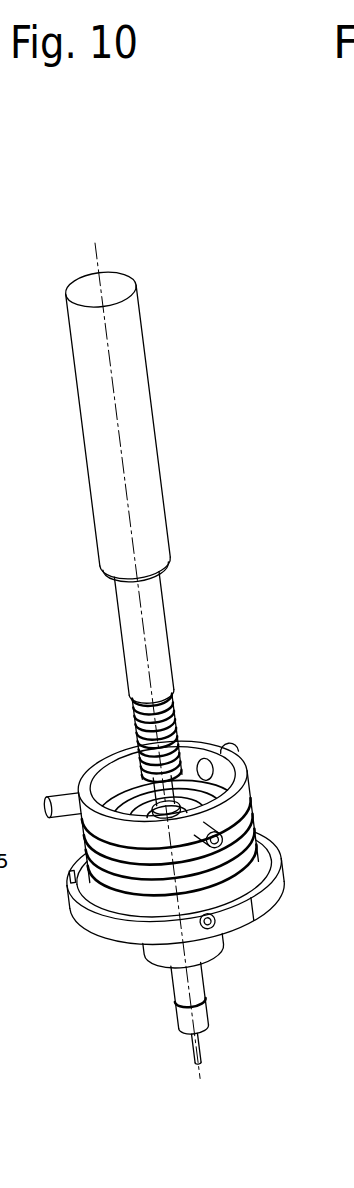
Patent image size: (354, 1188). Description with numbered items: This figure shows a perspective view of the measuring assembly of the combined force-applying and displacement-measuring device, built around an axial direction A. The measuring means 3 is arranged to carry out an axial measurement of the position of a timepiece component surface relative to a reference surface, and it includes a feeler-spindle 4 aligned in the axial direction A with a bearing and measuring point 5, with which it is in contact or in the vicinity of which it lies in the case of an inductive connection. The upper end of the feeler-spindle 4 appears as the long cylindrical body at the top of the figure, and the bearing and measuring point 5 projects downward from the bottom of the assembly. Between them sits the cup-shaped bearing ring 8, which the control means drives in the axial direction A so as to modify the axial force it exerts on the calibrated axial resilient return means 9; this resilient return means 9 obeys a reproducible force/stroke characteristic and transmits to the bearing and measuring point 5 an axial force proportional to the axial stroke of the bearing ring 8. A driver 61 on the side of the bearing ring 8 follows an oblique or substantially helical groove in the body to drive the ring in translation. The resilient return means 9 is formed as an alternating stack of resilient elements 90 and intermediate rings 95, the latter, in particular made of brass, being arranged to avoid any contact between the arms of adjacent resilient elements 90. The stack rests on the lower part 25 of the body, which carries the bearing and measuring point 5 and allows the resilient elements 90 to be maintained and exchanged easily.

The axial direction A is at (104, 252).
The measuring means 3 is at (167, 339).
The feeler-spindle 4 is at (125, 385).
The bearing and measuring point 5 is at (202, 1007).
The bearing ring 8 is at (243, 798).
The calibrated axial resilient return means 9 is at (278, 823).
The lower part 25 is at (273, 882).
The driver 61 is at (232, 742).
The resilient element 90 is at (255, 910).
The intermediate ring 95 is at (260, 814).